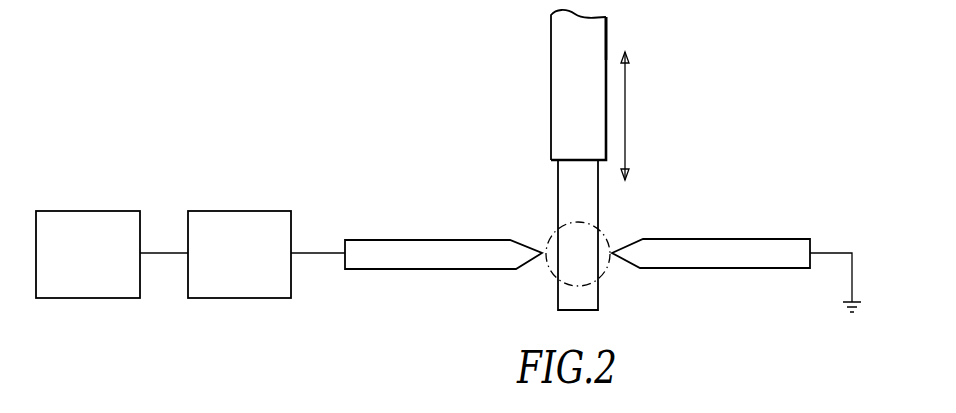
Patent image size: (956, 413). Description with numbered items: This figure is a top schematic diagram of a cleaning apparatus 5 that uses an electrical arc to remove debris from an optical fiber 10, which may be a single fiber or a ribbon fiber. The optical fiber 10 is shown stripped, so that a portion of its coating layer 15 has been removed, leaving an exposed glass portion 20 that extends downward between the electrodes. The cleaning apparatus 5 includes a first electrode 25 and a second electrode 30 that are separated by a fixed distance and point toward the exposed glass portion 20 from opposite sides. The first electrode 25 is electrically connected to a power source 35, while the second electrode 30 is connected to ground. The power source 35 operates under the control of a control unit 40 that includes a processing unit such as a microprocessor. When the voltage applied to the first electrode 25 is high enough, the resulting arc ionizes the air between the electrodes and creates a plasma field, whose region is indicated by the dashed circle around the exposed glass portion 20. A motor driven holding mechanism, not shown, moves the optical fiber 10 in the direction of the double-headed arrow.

The cleaning apparatus 5 is at (667, 204).
The optical fiber 10 is at (551, 55).
The coating layer 15 is at (595, 37).
The exposed glass portion 20 is at (580, 278).
The first electrode 25 is at (407, 240).
The second electrode 30 is at (735, 239).
The power source 35 is at (227, 211).
The control unit 40 is at (87, 211).